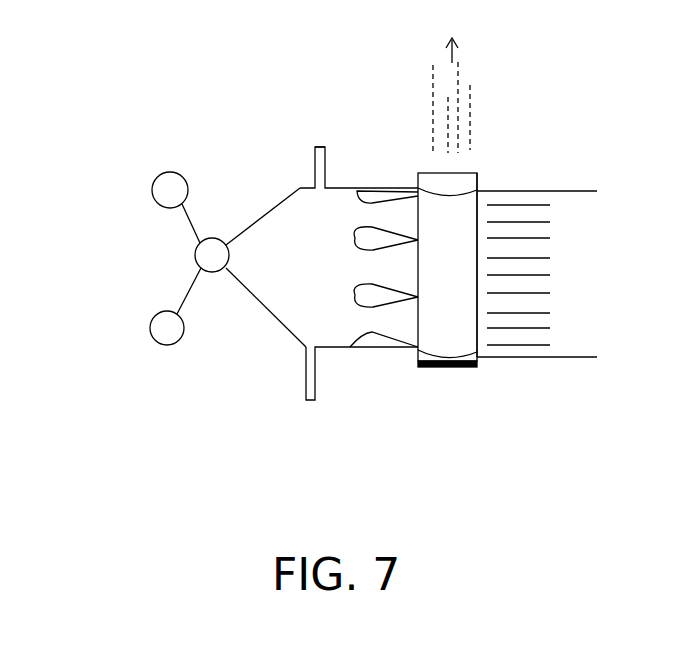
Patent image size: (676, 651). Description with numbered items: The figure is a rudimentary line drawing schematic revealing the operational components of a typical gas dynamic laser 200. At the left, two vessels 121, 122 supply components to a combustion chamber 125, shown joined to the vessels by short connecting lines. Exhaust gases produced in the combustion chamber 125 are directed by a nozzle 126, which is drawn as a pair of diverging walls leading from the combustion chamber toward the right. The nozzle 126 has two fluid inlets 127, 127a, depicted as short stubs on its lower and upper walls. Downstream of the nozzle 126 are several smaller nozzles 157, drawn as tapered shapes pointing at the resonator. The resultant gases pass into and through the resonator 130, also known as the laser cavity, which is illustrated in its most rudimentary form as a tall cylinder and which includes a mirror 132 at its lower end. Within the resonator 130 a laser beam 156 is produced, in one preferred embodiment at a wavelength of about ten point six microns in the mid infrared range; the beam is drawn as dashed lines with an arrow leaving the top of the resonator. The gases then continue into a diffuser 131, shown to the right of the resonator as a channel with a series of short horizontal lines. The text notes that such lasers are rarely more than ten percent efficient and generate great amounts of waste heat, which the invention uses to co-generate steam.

The gas dynamic laser 200 is at (158, 52).
The vessel 121 is at (177, 344).
The vessel 122 is at (174, 171).
The combustion chamber 125 is at (216, 238).
The nozzle 126 is at (277, 323).
The fluid inlet 127 is at (316, 388).
The fluid inlet 127a is at (320, 147).
The resonator 130 is at (440, 368).
The diffuser 131 is at (538, 191).
The mirror 132 is at (478, 358).
The laser beam 156 is at (470, 107).
The nozzles 157 is at (380, 188).